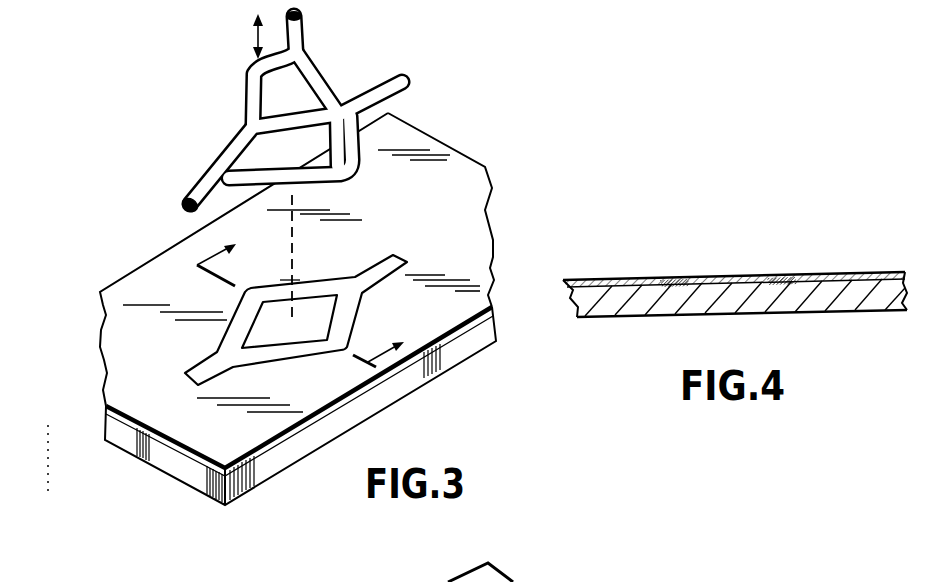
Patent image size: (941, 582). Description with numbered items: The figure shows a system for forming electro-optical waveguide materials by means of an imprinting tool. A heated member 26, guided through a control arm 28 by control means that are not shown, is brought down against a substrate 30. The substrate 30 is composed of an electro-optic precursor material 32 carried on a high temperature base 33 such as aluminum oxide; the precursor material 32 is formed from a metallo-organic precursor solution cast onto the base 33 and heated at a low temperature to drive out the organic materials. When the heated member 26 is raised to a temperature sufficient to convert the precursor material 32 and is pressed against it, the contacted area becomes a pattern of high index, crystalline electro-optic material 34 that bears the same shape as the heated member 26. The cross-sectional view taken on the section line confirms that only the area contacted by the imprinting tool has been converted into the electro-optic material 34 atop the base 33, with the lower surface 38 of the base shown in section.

In FIG. 3, the heated member 26 is at (261, 112).
In FIG. 3, the control arm 28 is at (335, 41).
In FIG. 3, the substrate 30 is at (297, 324).
In FIG. 3, the electro-optic precursor material 32 is at (299, 416).
In FIG. 4, the electro-optic precursor material 32 is at (734, 247).
In FIG. 3, the high temperature base 33 is at (300, 435).
In FIG. 4, the high temperature base 33 is at (735, 315).
In FIG. 3, the electro-optic material 34 is at (306, 297).
In FIG. 4, the electro-optic material 34 is at (718, 233).
In FIG. 4, the bottom surface 38 is at (734, 345).